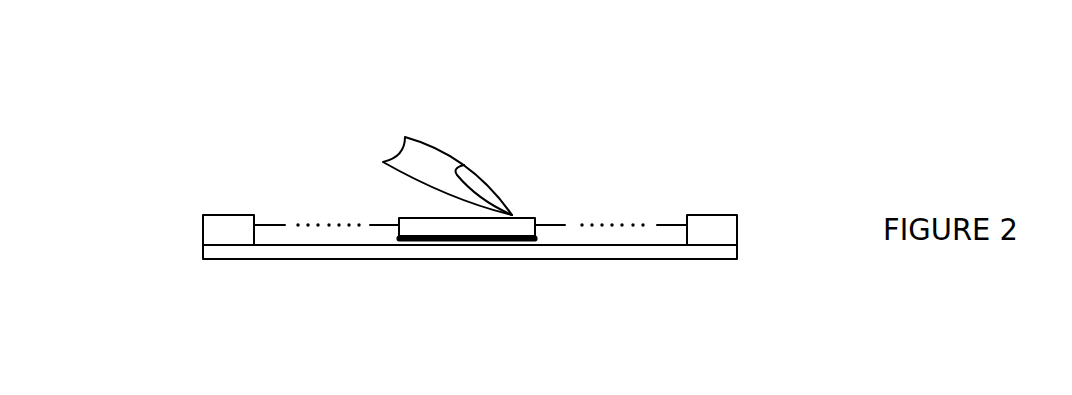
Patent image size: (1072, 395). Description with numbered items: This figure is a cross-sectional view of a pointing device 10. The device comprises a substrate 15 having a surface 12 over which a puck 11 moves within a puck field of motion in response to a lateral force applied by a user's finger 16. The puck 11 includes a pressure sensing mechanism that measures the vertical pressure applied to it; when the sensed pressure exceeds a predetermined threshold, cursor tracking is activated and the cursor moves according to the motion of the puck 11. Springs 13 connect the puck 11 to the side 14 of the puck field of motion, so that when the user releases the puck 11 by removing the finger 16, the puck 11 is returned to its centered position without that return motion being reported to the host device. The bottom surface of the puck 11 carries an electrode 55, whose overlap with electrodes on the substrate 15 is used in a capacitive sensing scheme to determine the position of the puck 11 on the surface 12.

The pointing device 10 is at (156, 183).
The puck 11 is at (466, 227).
The surface 12 is at (338, 240).
The springs 13 is at (555, 222).
The side 14 is at (723, 222).
The substrate 15 is at (493, 253).
The user's finger 16 is at (443, 153).
The electrode 55 is at (523, 242).